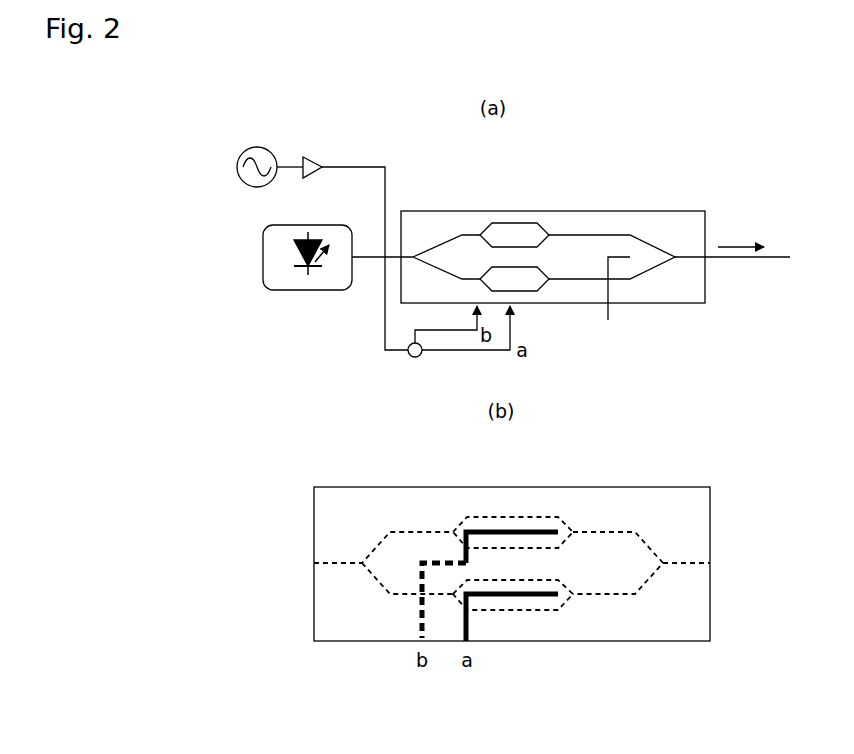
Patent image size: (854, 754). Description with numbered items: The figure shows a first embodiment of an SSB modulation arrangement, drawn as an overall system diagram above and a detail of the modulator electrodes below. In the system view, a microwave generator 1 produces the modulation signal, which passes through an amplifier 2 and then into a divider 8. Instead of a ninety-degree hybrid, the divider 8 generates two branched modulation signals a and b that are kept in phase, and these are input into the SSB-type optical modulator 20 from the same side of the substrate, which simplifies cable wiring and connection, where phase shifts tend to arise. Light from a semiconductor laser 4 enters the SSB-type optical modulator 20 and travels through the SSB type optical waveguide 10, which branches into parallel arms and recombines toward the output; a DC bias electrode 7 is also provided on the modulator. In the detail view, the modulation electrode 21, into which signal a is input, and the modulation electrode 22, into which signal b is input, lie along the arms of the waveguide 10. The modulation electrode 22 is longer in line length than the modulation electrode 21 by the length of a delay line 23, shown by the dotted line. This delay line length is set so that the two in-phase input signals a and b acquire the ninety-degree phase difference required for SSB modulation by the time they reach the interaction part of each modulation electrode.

The microwave generator 1 is at (262, 148).
The amplifier 2 is at (322, 155).
The semiconductor laser 4 is at (305, 292).
The DC bias electrode 7 is at (609, 313).
The divider 8 is at (410, 356).
The SSB type optical waveguide 10 is at (380, 592).
The SSB-type optical modulator 20 is at (638, 208).
The modulation electrode 21 is at (512, 594).
The modulation electrode 22 is at (512, 532).
The delay line 23 is at (418, 613).